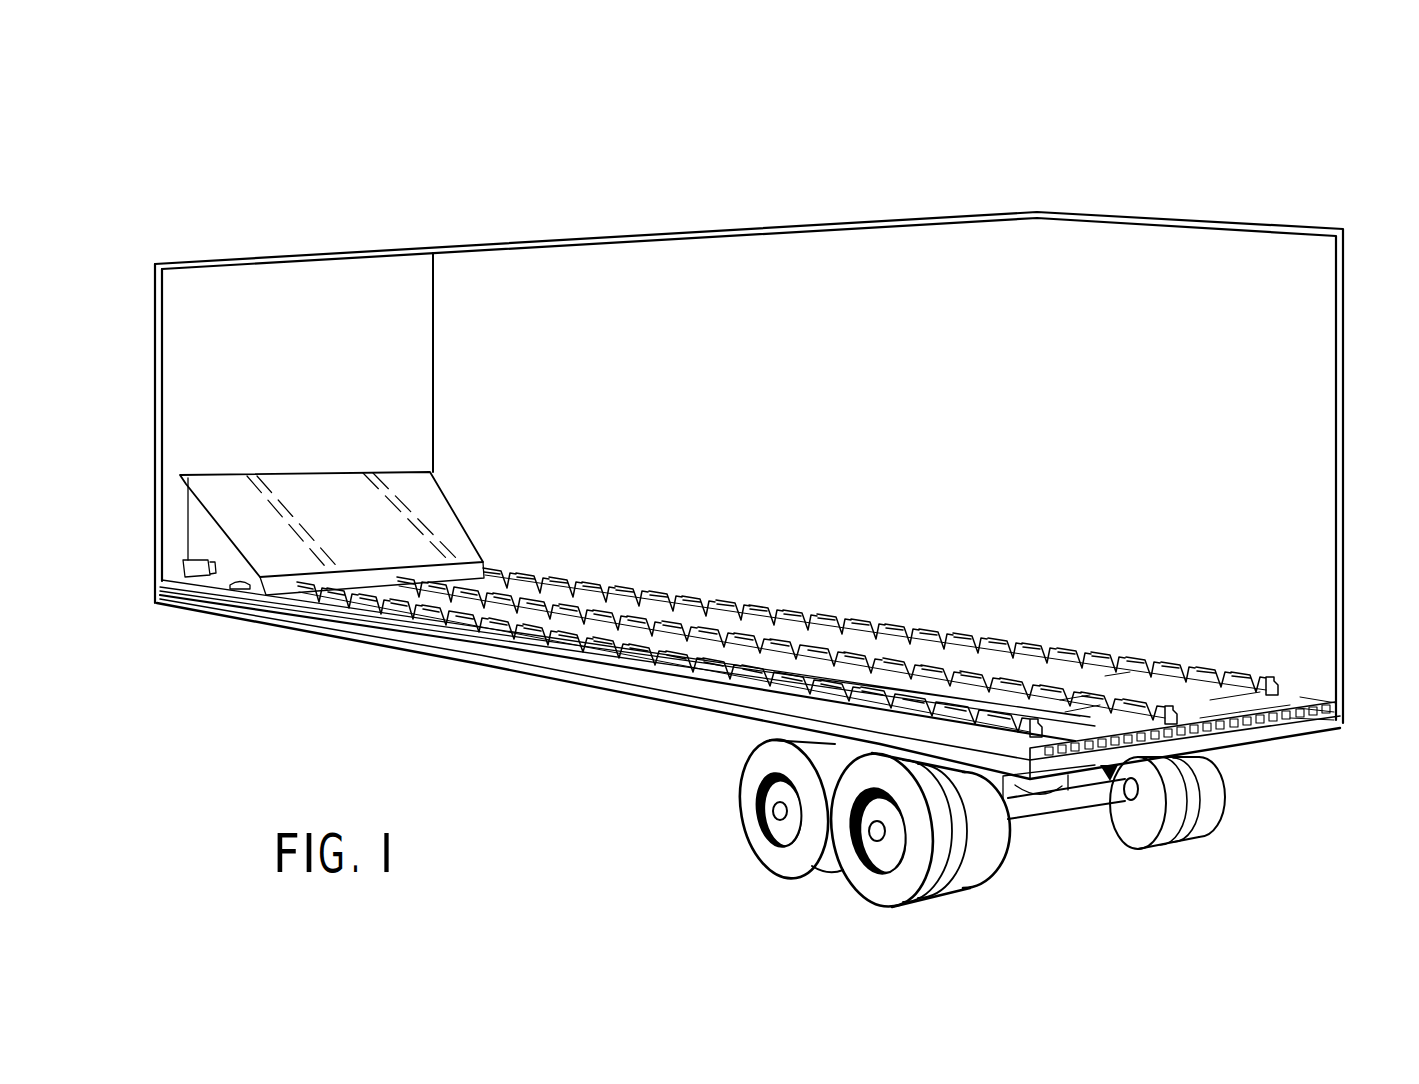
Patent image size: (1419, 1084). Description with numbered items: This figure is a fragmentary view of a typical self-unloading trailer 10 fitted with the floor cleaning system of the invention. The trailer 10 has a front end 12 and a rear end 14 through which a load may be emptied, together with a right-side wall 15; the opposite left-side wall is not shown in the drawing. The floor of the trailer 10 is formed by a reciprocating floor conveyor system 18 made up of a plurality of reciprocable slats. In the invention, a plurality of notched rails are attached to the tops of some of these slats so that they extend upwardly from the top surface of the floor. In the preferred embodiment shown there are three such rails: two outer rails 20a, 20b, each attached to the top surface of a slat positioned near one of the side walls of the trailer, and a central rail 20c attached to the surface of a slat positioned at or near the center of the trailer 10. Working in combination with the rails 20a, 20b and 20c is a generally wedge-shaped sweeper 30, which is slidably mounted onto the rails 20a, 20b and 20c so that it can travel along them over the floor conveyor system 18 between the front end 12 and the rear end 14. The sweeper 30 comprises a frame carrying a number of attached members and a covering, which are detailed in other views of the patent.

The self-unloading trailer 10 is at (681, 211).
The front end 12 is at (294, 392).
The rear end 14 is at (1310, 468).
The right-side wall 15 is at (825, 268).
The reciprocating floor conveyor system 18 is at (1300, 715).
The outer rail 20a is at (698, 660).
The outer rail 20b is at (1193, 662).
The central rail 20c is at (1099, 698).
The sweeper 30 is at (238, 508).